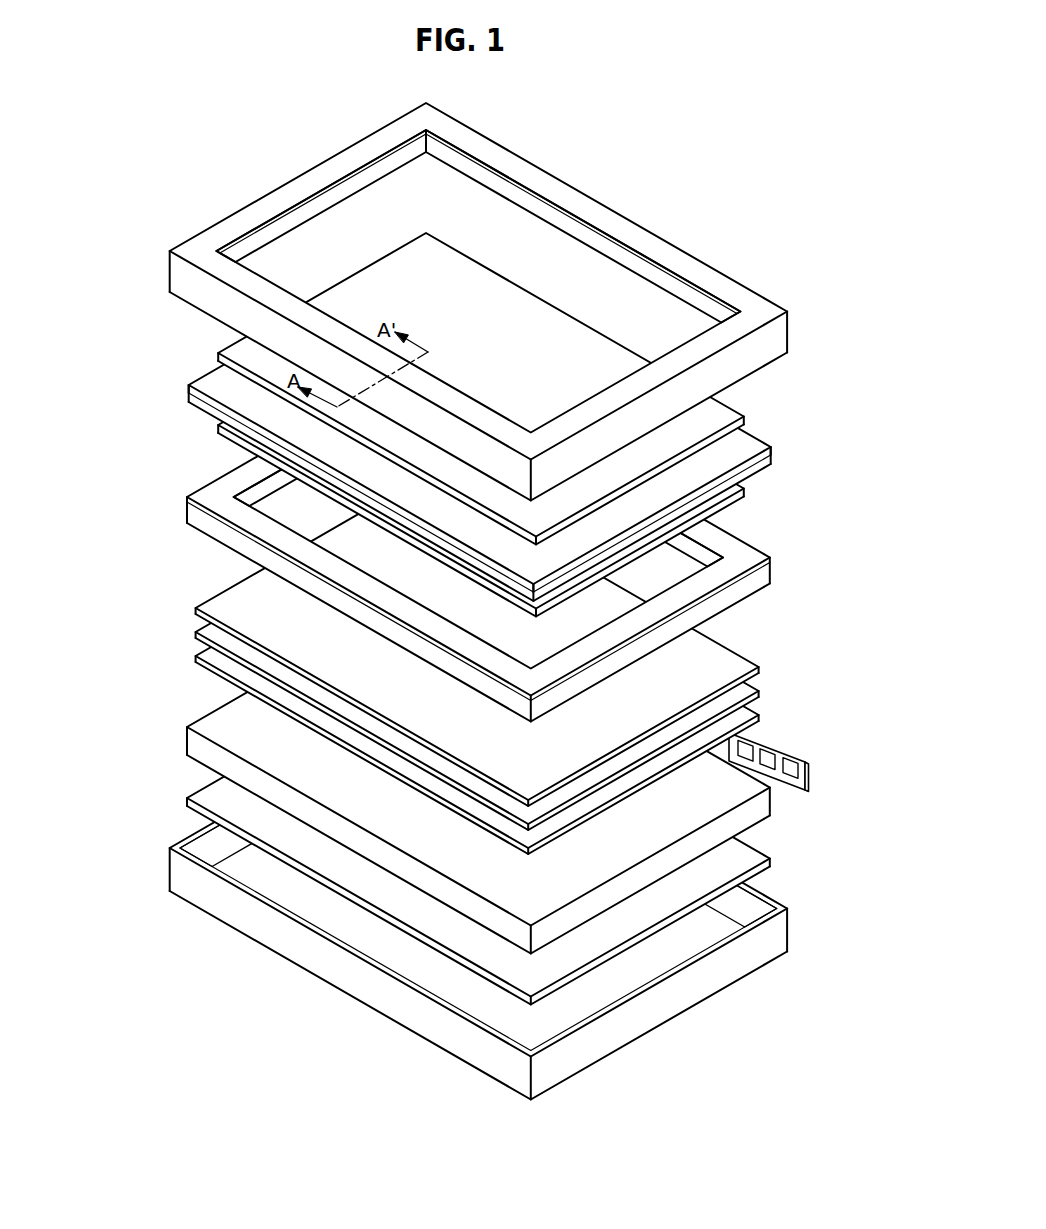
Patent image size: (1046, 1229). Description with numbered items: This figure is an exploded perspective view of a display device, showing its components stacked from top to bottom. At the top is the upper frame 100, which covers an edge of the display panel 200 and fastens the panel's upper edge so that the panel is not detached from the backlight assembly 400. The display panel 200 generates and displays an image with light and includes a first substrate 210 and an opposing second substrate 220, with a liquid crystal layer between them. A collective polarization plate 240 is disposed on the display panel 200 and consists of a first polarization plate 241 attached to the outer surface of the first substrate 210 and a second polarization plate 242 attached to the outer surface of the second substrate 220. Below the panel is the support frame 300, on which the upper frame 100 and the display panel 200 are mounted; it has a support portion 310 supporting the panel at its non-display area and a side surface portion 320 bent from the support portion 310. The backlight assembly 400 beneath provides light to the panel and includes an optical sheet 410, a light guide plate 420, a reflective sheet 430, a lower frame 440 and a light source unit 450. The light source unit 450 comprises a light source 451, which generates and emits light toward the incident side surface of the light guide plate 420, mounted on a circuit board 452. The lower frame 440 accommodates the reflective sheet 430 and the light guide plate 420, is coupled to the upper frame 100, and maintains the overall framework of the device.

The upper frame 100 is at (789, 337).
The display panel 200 is at (540, 424).
The first substrate 210 is at (753, 467).
The second substrate 220 is at (746, 443).
The collective polarization plate 240 is at (480, 425).
The first polarization plate 241 is at (225, 421).
The second polarization plate 242 is at (237, 352).
The support frame 300 is at (539, 540).
The support portion 310 is at (730, 538).
The side surface portion 320 is at (733, 592).
The backlight assembly 400 is at (501, 787).
The optical sheet 410 is at (120, 820).
The light guide plate 420 is at (196, 743).
The reflective sheet 430 is at (215, 790).
The lower frame 440 is at (208, 838).
The light source unit 450 is at (836, 773).
The light source 451 is at (790, 786).
The circuit board 452 is at (794, 750).